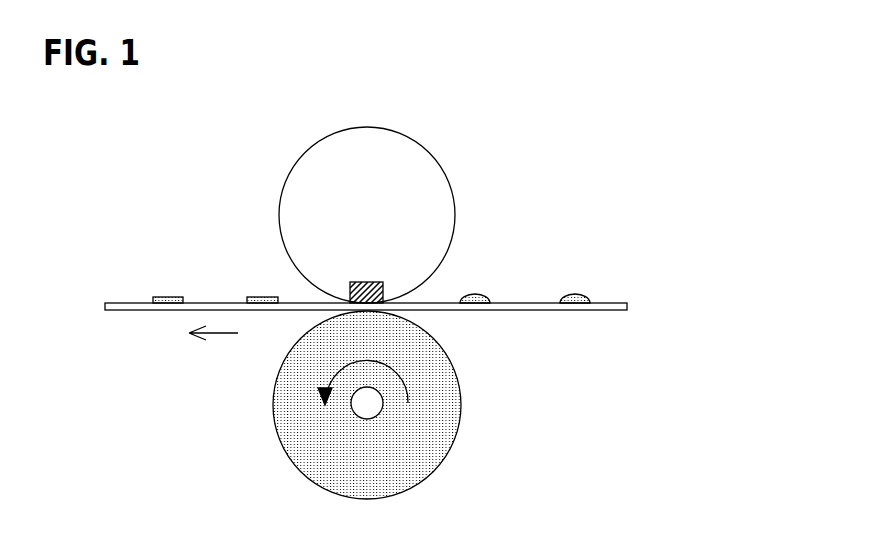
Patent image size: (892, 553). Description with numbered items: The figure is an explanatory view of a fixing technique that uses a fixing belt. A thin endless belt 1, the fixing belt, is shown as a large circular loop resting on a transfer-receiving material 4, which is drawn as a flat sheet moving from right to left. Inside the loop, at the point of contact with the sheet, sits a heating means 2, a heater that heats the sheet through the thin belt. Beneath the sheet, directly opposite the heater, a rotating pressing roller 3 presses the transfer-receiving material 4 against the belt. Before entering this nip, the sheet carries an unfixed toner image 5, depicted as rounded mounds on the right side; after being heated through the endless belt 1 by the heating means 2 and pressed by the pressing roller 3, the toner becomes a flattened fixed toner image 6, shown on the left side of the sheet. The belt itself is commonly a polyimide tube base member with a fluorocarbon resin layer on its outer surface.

The endless belt 1 is at (422, 153).
The heating means 2 is at (383, 283).
The pressing roller 3 is at (445, 428).
The transfer-receiving material 4 is at (533, 311).
The unfixed toner image 5 is at (577, 300).
The fixed toner image 6 is at (168, 297).